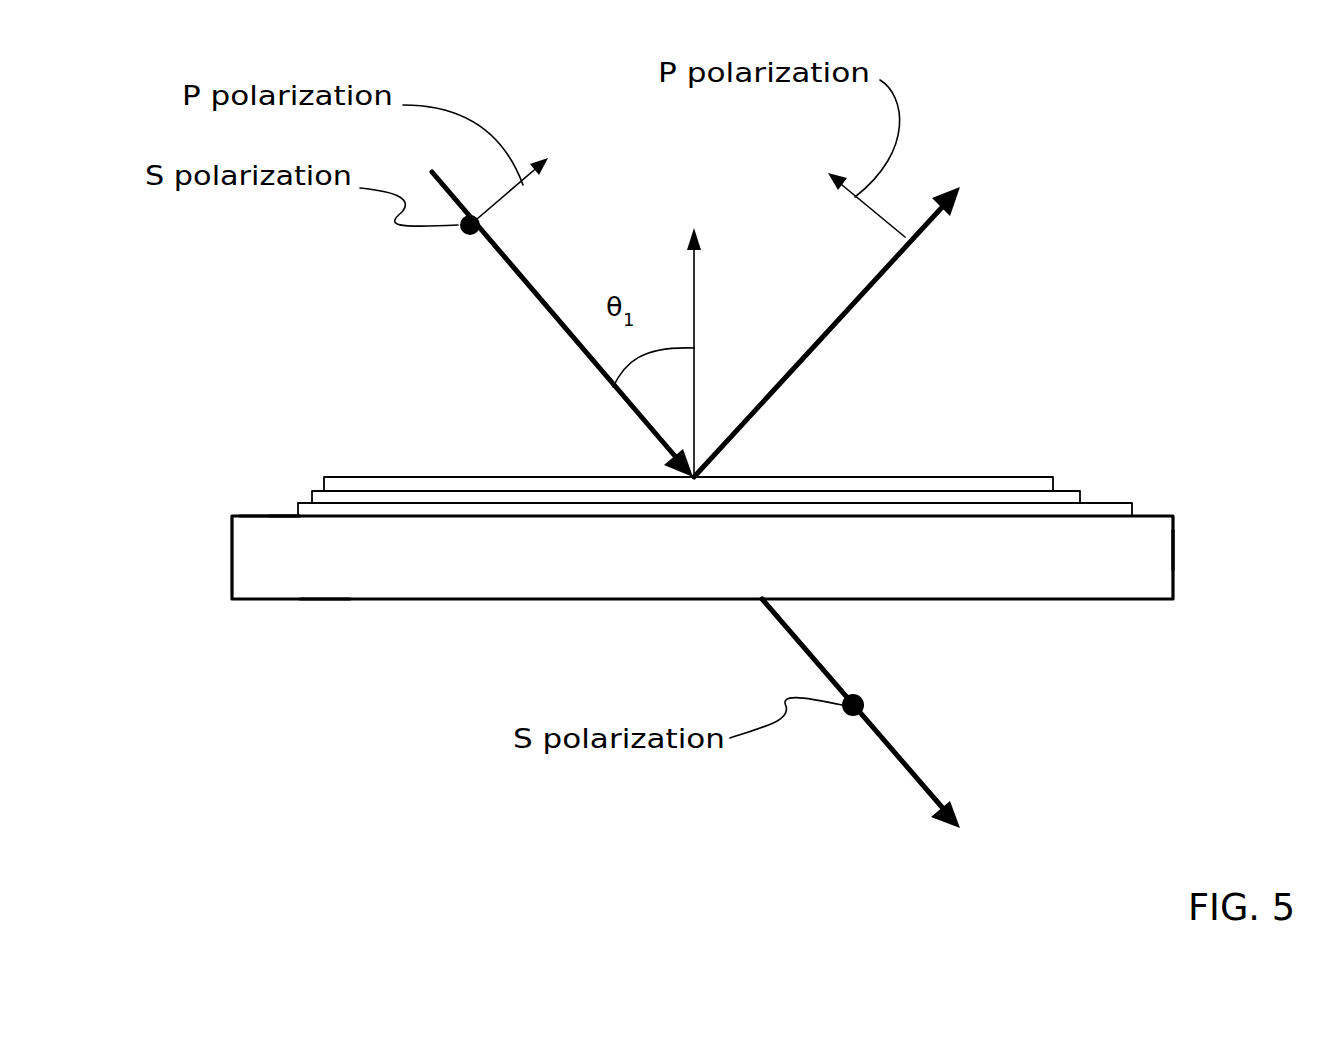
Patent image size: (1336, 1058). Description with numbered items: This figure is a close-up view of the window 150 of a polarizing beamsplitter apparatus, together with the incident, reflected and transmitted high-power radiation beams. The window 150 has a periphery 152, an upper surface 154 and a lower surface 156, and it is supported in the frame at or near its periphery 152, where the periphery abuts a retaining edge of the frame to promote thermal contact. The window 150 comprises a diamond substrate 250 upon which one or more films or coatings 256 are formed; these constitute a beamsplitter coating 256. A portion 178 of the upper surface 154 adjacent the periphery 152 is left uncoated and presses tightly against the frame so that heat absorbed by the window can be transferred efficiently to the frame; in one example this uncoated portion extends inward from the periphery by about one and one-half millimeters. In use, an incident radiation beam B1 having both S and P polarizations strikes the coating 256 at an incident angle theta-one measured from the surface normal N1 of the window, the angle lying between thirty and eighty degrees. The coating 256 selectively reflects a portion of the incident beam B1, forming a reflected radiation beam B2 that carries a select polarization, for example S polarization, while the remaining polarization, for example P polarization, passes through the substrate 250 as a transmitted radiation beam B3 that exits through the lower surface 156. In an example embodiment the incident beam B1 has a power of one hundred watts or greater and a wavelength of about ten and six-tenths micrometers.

The window 150 is at (1072, 408).
The periphery 152 is at (232, 560).
The upper surface 154 is at (285, 515).
The lower surface 156 is at (323, 600).
The portion of window upper surface 178 is at (260, 515).
The diamond substrate 250 is at (1190, 546).
The beamsplitter coating 256 is at (1185, 468).
The incident radiation beam B1 is at (552, 320).
The reflected radiation beam B2 is at (830, 335).
The transmitted radiation beam B3 is at (893, 760).
The surface normal N1 is at (695, 280).